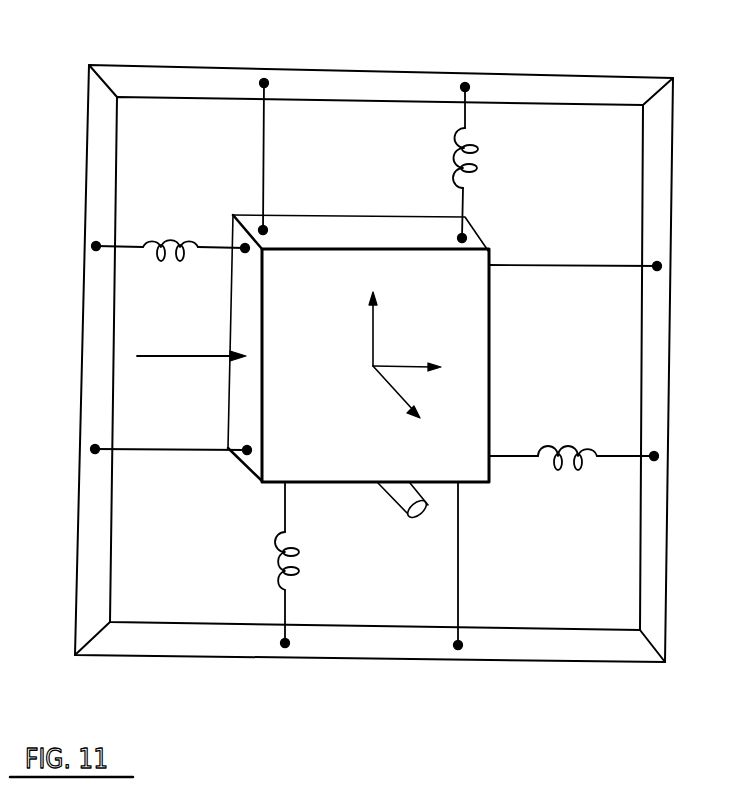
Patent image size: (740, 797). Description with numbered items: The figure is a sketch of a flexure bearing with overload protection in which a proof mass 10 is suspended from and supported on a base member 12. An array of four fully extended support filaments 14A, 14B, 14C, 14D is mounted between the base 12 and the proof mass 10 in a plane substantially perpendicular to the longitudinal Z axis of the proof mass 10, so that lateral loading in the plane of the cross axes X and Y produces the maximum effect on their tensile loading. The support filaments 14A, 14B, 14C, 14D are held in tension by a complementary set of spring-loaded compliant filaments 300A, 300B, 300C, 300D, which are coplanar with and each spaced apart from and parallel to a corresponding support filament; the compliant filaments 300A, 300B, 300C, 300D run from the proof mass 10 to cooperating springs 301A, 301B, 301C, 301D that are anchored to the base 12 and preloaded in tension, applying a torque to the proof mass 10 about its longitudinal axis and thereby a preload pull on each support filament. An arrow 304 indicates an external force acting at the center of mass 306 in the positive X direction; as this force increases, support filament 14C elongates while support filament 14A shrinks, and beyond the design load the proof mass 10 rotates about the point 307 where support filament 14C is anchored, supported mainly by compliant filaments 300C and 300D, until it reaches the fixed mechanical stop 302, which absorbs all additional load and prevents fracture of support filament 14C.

The proof mass 10 is at (323, 232).
The base member 12 is at (582, 90).
The support filament 14A is at (560, 263).
The support filament 14B is at (458, 578).
The support filament 14C is at (140, 450).
The support filament 14D is at (263, 140).
The compliant filament 300A is at (528, 455).
The compliant filament 300B is at (285, 512).
The compliant filament 300C is at (210, 247).
The compliant filament 300D is at (465, 203).
The cooperating spring 301A is at (552, 443).
The cooperating spring 301B is at (270, 563).
The cooperating spring 301C is at (157, 240).
The cooperating spring 301D is at (470, 152).
The mechanical stop 302 is at (397, 497).
The force arrow 304 is at (192, 358).
The center of mass 306 is at (373, 366).
The anchor point 307 is at (235, 462).